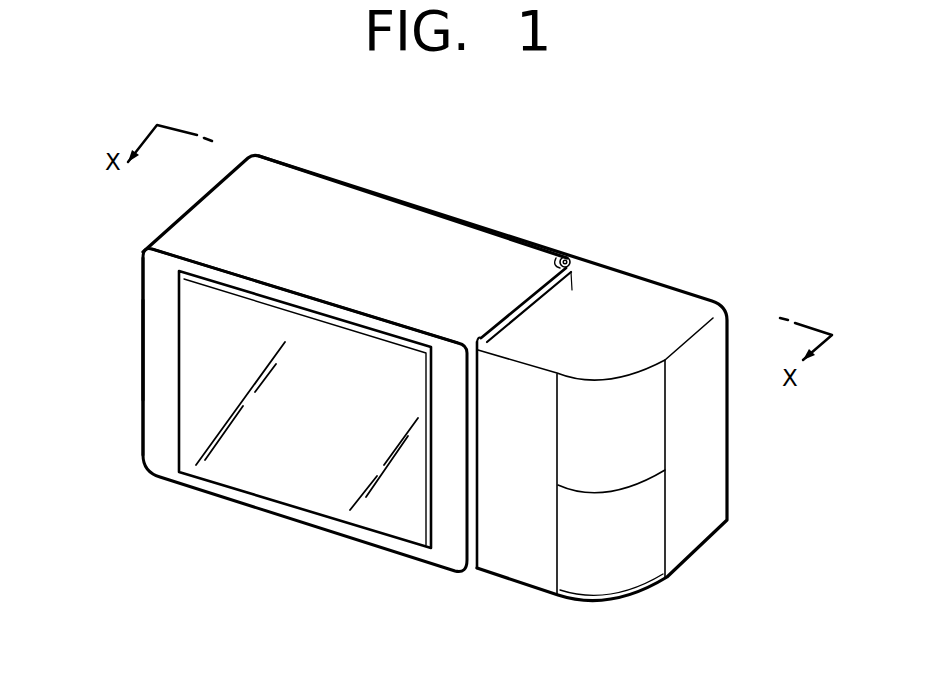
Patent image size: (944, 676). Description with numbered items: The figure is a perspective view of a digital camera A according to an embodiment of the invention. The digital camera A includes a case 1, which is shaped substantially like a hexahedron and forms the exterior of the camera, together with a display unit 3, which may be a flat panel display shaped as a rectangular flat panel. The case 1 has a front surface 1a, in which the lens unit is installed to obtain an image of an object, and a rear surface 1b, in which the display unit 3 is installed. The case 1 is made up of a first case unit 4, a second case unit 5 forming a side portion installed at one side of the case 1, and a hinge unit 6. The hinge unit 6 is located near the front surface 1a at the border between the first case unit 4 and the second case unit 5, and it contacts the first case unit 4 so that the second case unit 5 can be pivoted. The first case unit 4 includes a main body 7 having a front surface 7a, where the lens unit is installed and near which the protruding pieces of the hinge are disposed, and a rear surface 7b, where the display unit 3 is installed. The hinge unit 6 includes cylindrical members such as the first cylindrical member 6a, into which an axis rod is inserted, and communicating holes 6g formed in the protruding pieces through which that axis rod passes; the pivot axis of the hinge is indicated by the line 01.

The case 1 is at (700, 125).
The front surface 1a is at (396, 197).
The rear surface 1b is at (153, 352).
The display unit 3 is at (267, 475).
The first case unit 4 is at (450, 225).
The second case unit 5 is at (675, 300).
The hinge unit 6 is at (580, 262).
The first cylindrical member 6a is at (574, 266).
The communicating hole 6g is at (560, 260).
The main body 7 is at (336, 205).
The front surface of main body 7a is at (284, 162).
The rear surface of main body 7b is at (153, 400).
The rotation axis 01 is at (565, 258).
The digital camera A is at (795, 142).